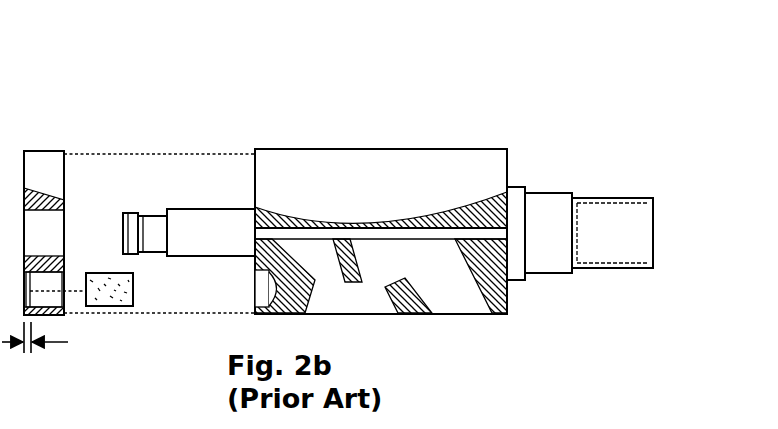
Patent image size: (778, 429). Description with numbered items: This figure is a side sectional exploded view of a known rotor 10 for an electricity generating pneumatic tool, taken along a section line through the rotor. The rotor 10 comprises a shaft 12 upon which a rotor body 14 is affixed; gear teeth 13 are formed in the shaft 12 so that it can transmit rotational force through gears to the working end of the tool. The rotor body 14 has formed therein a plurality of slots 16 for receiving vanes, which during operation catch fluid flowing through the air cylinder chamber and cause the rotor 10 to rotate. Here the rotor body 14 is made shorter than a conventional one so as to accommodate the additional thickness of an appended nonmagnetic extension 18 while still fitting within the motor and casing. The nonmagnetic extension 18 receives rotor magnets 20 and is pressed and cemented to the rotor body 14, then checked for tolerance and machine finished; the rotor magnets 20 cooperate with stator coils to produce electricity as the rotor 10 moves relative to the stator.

The rotor 10 is at (327, 211).
The shaft 12 is at (186, 218).
The gear teeth 13 is at (611, 193).
The rotor body 14 is at (497, 315).
The slots 16 is at (362, 192).
The nonmagnetic extension 18 is at (53, 148).
The rotor magnets 20 is at (115, 313).